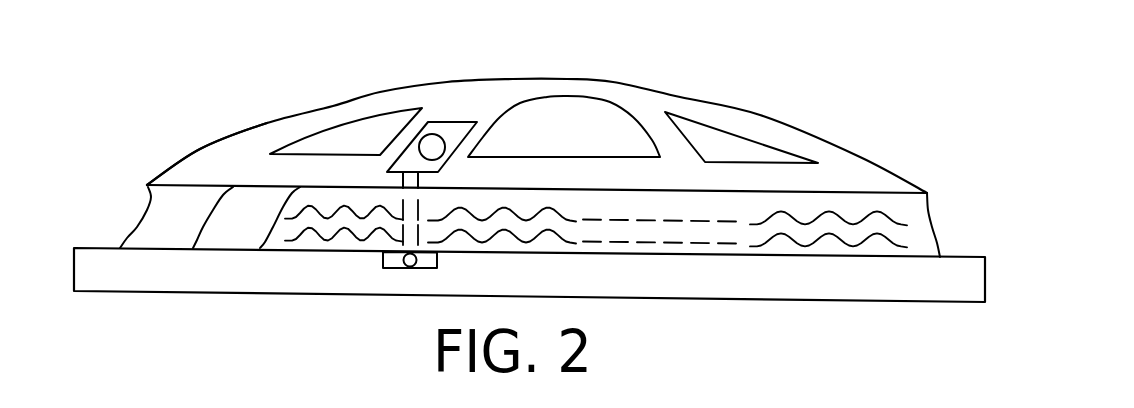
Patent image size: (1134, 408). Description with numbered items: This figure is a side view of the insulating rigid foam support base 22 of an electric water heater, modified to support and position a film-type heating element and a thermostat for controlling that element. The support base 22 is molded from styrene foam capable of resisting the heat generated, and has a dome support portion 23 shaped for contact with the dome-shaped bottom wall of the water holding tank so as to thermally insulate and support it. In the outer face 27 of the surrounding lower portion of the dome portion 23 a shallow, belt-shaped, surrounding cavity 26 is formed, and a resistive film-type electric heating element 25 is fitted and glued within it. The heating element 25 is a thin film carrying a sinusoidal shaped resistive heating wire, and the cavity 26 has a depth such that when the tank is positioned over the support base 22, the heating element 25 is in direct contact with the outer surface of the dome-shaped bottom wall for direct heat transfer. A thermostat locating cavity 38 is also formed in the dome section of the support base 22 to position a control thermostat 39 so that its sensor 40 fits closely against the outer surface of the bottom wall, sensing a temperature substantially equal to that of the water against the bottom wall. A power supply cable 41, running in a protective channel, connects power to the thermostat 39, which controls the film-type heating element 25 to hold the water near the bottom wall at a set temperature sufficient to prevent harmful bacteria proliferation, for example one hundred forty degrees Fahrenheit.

The insulating rigid foam support base 22 is at (838, 58).
The dome support portion 23 is at (671, 107).
The resistive film-type electric heating element 25 is at (900, 232).
The surrounding cavity 26 is at (140, 215).
The outer face 27 is at (192, 157).
The thermostat locating cavity 38 is at (477, 122).
The control thermostat 39 is at (415, 155).
The sensor 40 is at (437, 135).
The power supply cable 41 is at (403, 263).